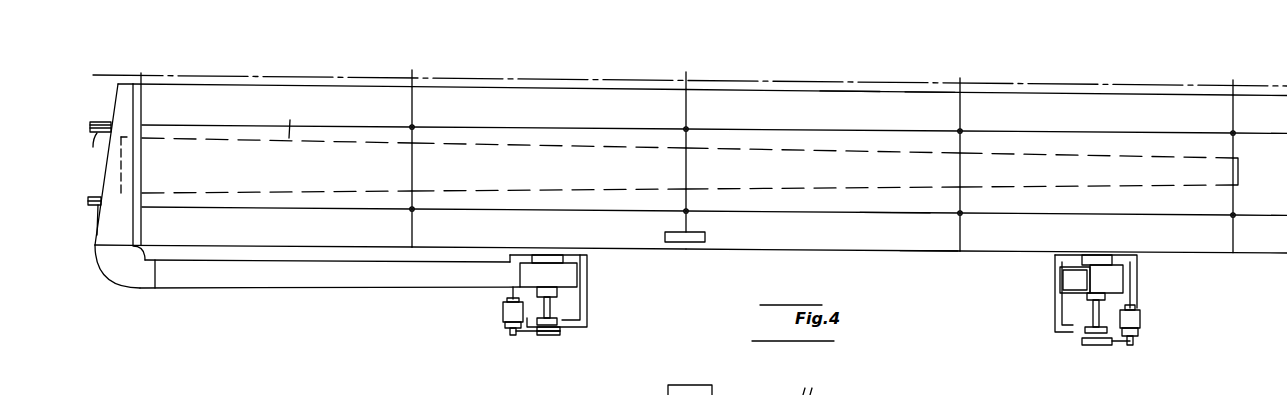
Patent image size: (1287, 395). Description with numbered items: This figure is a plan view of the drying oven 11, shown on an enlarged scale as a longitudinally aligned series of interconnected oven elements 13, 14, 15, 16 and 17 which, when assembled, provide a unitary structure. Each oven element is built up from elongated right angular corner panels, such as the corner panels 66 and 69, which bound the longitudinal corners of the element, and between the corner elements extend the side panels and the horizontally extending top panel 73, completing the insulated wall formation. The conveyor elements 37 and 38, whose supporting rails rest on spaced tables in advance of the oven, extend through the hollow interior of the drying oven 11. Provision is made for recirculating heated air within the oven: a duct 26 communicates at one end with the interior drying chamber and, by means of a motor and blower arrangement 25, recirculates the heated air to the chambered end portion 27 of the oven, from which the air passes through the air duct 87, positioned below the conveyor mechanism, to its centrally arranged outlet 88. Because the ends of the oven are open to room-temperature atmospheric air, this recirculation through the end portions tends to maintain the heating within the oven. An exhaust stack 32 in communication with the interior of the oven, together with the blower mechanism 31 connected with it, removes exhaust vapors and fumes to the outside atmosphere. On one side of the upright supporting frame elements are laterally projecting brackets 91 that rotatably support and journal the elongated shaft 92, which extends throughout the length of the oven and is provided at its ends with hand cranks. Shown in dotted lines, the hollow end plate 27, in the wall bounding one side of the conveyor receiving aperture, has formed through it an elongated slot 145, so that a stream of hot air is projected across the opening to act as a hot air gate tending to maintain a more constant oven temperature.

The drying oven 11 is at (665, 62).
The oven element 13 is at (265, 104).
The oven element 14 is at (542, 102).
The oven element 15 is at (802, 102).
The oven element 16 is at (1053, 102).
The oven element 17 is at (1268, 116).
The motor and blower arrangement 25 is at (500, 330).
The duct 26 is at (358, 281).
The chambered end portion 27 is at (122, 235).
The blower mechanism 31 is at (1048, 326).
The exhaust stack 32 is at (1075, 281).
The conveyor element 37 is at (93, 147).
The conveyor element 38 is at (97, 122).
The right angular corner panel 66 is at (923, 92).
The right angular corner panel 69 is at (925, 252).
The top panel 73 is at (897, 204).
The air duct 87 is at (291, 119).
The outlet 88 is at (1238, 172).
The bracket 91 is at (687, 79).
The shaft 92 is at (853, 84).
The elongated slot 145 is at (125, 172).